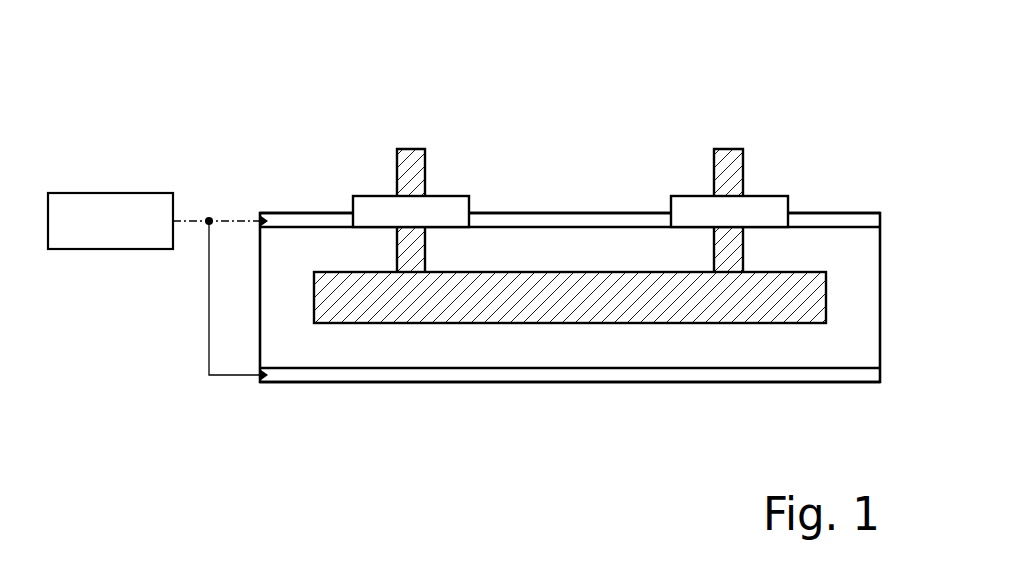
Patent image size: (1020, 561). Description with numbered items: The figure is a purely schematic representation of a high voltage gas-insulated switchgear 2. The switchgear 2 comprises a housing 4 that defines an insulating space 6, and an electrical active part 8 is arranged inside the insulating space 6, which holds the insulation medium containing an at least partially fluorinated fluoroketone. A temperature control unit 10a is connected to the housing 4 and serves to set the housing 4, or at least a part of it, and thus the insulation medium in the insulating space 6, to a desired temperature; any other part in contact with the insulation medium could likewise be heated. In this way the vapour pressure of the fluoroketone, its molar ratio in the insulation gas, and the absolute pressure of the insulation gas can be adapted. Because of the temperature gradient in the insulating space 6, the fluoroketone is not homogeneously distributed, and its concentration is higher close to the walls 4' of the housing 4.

The switchgear 2 is at (534, 153).
The housing 4 is at (570, 166).
The walls 4' is at (570, 428).
The insulating space 6 is at (535, 252).
The electrical active part 8 is at (453, 300).
The temperature control unit 10a is at (112, 190).